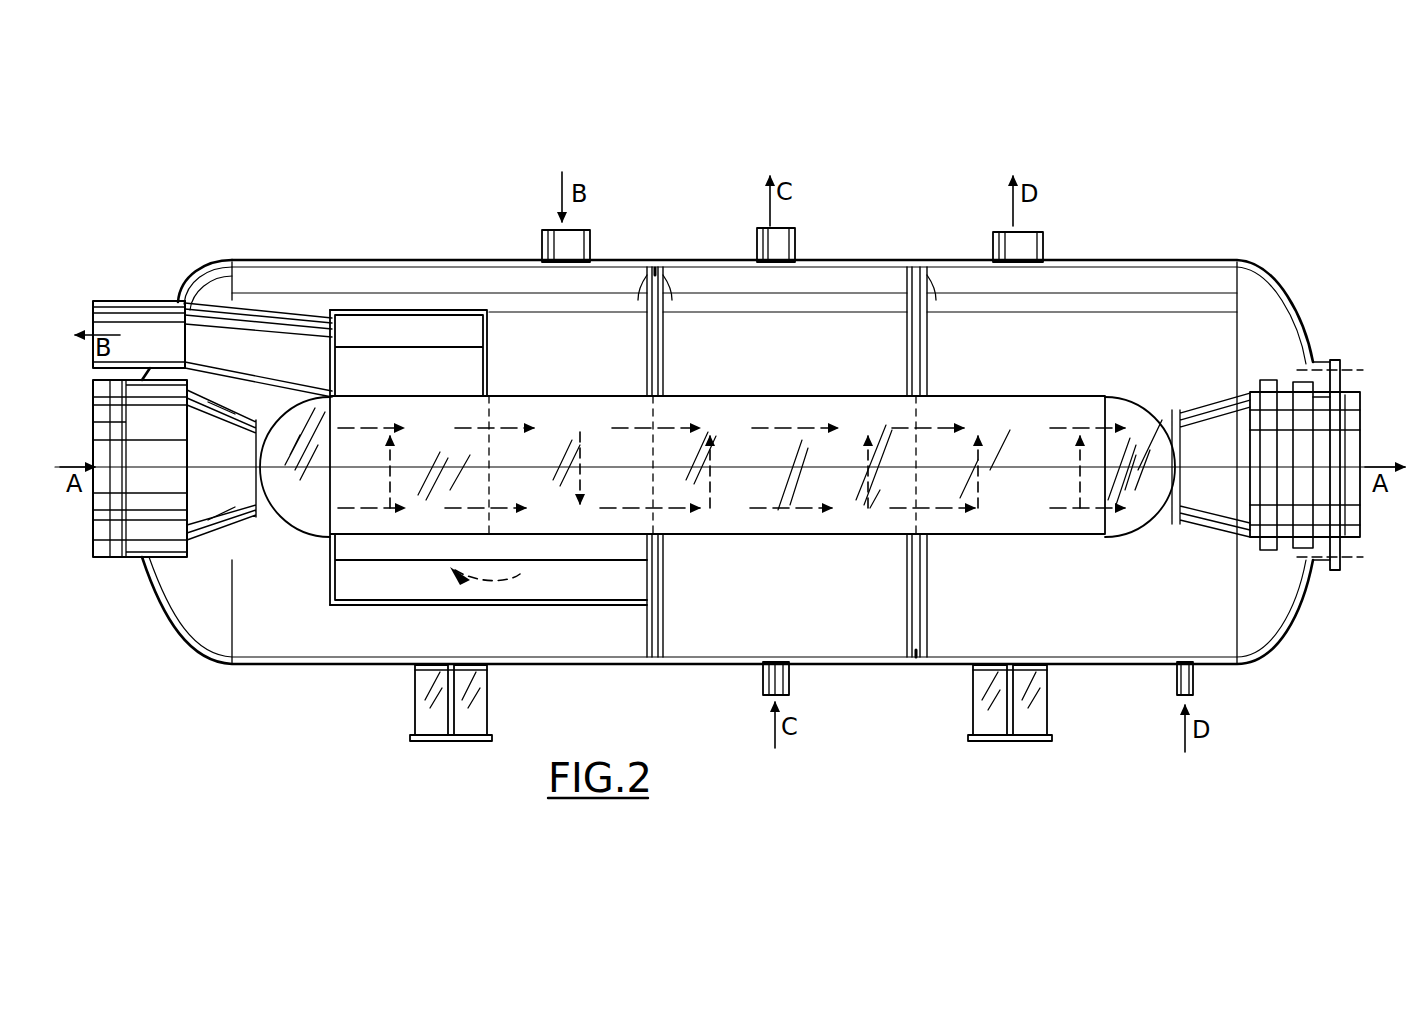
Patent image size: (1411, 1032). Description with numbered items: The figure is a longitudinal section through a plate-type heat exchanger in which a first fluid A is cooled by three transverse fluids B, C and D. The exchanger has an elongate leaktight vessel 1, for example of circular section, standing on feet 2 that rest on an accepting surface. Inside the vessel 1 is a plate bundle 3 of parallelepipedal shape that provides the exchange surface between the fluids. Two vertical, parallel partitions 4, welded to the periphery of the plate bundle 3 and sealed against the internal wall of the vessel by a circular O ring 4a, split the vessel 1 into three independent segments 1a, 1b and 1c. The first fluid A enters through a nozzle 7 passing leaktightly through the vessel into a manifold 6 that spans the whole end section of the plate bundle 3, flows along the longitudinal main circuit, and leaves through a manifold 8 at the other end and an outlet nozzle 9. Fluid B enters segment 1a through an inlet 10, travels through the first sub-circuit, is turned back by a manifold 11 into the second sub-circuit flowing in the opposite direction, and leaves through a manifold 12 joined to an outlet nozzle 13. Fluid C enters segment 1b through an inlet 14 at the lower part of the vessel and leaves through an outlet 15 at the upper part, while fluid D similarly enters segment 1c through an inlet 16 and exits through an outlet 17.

The leaktight vessel 1 is at (340, 236).
The first segment 1a is at (430, 258).
The second segment 1b is at (832, 258).
The third segment 1c is at (1133, 258).
The feet 2 is at (418, 722).
The plate bundle 3 is at (824, 392).
The partitions 4 is at (668, 290).
The circular O ring 4a is at (653, 266).
The manifold 6 is at (286, 520).
The nozzle 7 is at (125, 558).
The manifold 8 is at (1128, 525).
The nozzle 9 is at (1345, 558).
The inlet 10 is at (590, 242).
The manifold 11 is at (524, 607).
The manifold 12 is at (455, 310).
The nozzle 13 is at (120, 299).
The inlet 14 is at (790, 682).
The outlet 15 is at (757, 242).
The inlet 16 is at (1194, 685).
The outlet 17 is at (1043, 242).